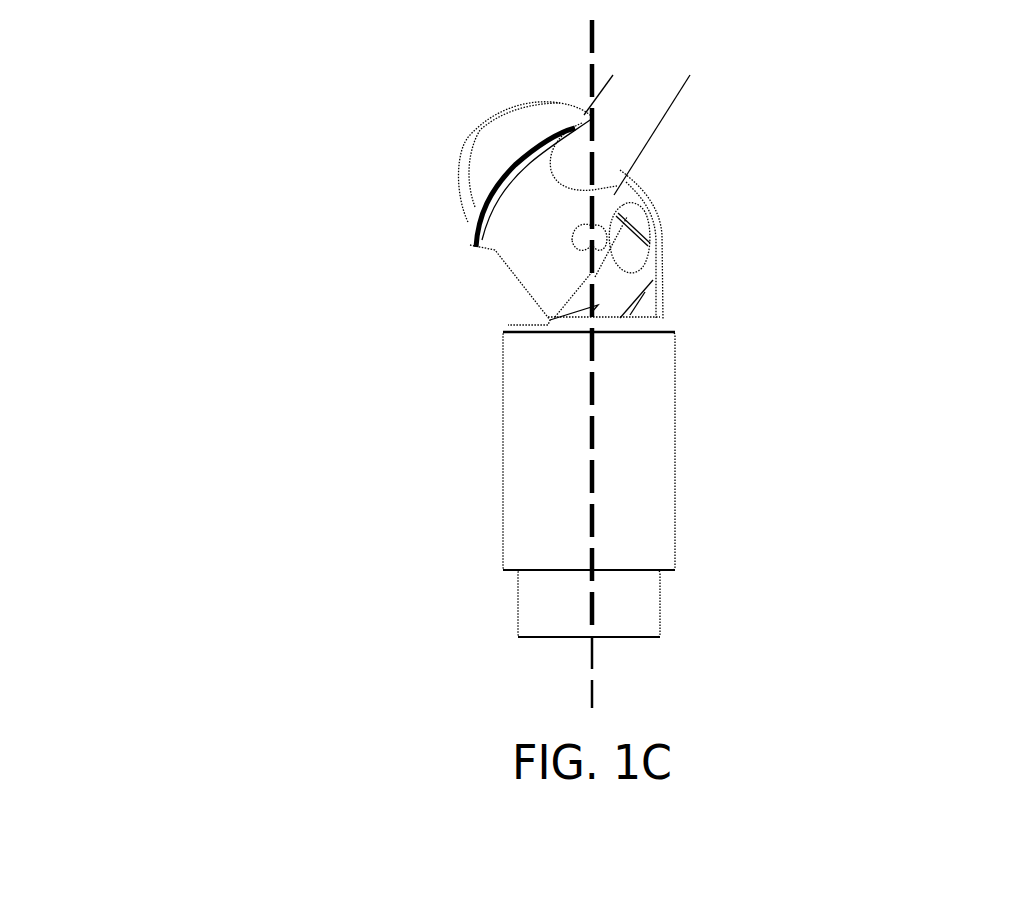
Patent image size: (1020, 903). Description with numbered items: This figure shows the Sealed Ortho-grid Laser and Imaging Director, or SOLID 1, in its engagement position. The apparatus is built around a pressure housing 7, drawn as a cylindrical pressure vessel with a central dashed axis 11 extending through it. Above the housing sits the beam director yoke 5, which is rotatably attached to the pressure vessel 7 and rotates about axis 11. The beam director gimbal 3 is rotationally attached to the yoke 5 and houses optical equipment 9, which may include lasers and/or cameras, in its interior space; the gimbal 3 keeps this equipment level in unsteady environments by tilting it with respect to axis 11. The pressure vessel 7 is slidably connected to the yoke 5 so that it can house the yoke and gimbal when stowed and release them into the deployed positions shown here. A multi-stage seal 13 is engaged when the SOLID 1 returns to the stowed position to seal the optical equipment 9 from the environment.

The Sealed Ortho-grid Laser and Imaging Director (SOLID) 1 is at (214, 185).
The beam director gimbal 3 is at (453, 168).
The beam director yoke 5 is at (657, 318).
The pressure housing 7 is at (674, 543).
The optical equipment 9 is at (617, 186).
The axis 11 is at (592, 602).
The multi-stage seal 13 is at (470, 245).